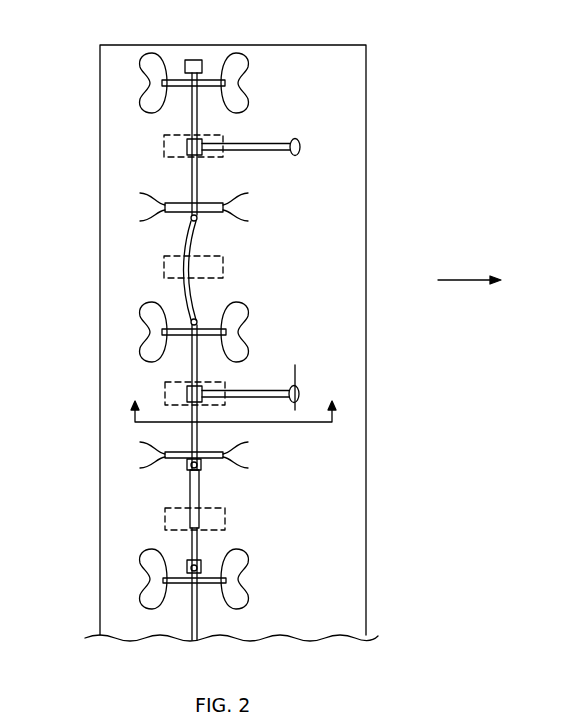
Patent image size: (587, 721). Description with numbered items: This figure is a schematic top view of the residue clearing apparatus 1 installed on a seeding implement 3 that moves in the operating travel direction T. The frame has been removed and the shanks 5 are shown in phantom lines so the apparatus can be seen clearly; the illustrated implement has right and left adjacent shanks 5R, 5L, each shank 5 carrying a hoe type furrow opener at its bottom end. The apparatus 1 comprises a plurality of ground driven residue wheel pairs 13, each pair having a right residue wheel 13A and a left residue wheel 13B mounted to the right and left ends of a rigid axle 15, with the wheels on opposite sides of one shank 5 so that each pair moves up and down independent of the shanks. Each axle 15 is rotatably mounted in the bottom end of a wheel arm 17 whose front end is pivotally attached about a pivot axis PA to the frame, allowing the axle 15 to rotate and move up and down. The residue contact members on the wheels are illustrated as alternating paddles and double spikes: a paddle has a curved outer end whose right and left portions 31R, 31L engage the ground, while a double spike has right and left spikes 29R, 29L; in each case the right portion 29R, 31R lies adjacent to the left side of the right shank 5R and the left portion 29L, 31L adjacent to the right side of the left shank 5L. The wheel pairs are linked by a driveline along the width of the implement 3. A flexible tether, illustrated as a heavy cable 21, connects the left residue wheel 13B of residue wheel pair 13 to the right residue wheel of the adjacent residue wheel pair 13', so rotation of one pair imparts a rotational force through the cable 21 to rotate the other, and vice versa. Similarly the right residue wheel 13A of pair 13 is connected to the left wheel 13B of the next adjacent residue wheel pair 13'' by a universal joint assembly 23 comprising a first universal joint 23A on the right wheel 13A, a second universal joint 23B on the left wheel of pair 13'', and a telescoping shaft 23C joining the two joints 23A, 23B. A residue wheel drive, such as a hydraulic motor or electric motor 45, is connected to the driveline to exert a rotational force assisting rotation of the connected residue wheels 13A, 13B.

The seeding implement 3 is at (366, 170).
The left residue wheel 13B is at (175, 319).
The left portion of paddle 31L is at (140, 302).
The right portion of paddle 31R is at (140, 350).
The hydraulic motor or electric motor 45 is at (204, 66).
The rigid axle 15 is at (190, 109).
The adjacent residue wheel pair 13' is at (299, 121).
The residue wheel pair 13 is at (313, 331).
The next adjacent residue wheel pair 13'' is at (316, 602).
The wheel arm 17 is at (265, 142).
The right residue wheel 13A is at (175, 338).
The left spike 29L is at (250, 194).
The right spike 29R is at (252, 222).
The heavy cable 21 is at (182, 244).
The shank 5 is at (194, 328).
The left shank 5L is at (164, 268).
The right shank 5R is at (165, 384).
The pivot axis PA is at (297, 376).
The residue clearing apparatus 1 is at (235, 414).
The universal joint assembly 23 is at (216, 516).
The first universal joint 23A is at (188, 470).
The telescoping shaft 23C is at (200, 516).
The second universal joint 23B is at (204, 567).
The operating travel direction T is at (478, 282).